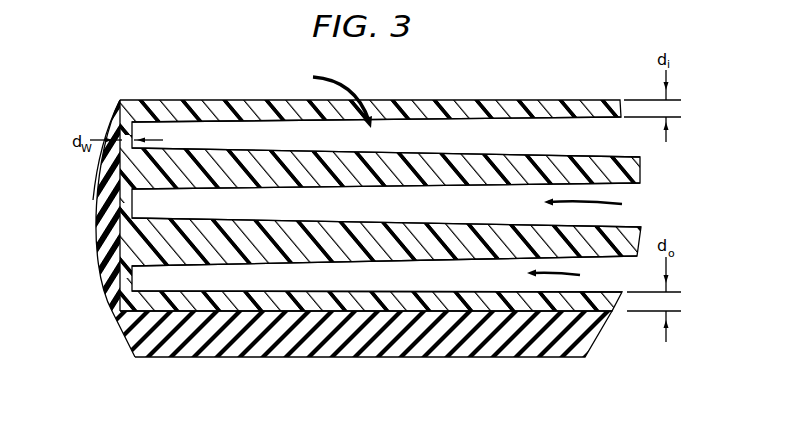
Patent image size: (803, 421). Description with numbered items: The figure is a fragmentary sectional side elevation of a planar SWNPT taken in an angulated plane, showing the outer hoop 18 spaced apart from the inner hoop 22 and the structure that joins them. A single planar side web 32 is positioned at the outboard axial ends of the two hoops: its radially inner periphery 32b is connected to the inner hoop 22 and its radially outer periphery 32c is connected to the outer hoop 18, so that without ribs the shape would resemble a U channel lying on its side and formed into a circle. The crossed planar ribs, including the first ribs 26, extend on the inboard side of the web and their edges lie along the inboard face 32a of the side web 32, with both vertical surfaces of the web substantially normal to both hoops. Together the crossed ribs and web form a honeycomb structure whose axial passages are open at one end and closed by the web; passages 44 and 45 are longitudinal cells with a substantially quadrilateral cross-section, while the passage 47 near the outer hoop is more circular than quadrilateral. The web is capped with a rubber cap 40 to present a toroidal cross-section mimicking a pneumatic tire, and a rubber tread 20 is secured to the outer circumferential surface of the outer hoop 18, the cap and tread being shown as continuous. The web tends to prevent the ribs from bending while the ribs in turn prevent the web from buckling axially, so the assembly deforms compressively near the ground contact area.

The outer hoop 18 is at (598, 291).
The rubber tread 20 is at (532, 358).
The inner hoop 22 is at (388, 100).
The first ribs 26 is at (640, 178).
The side web 32 is at (110, 240).
The inboard face 32a is at (130, 202).
The radially inner periphery 32b is at (137, 127).
The radially outer periphery 32c is at (132, 276).
The cap 40 is at (113, 114).
The passage 44 is at (333, 97).
The passage 45 is at (592, 203).
The passage 47 is at (563, 275).